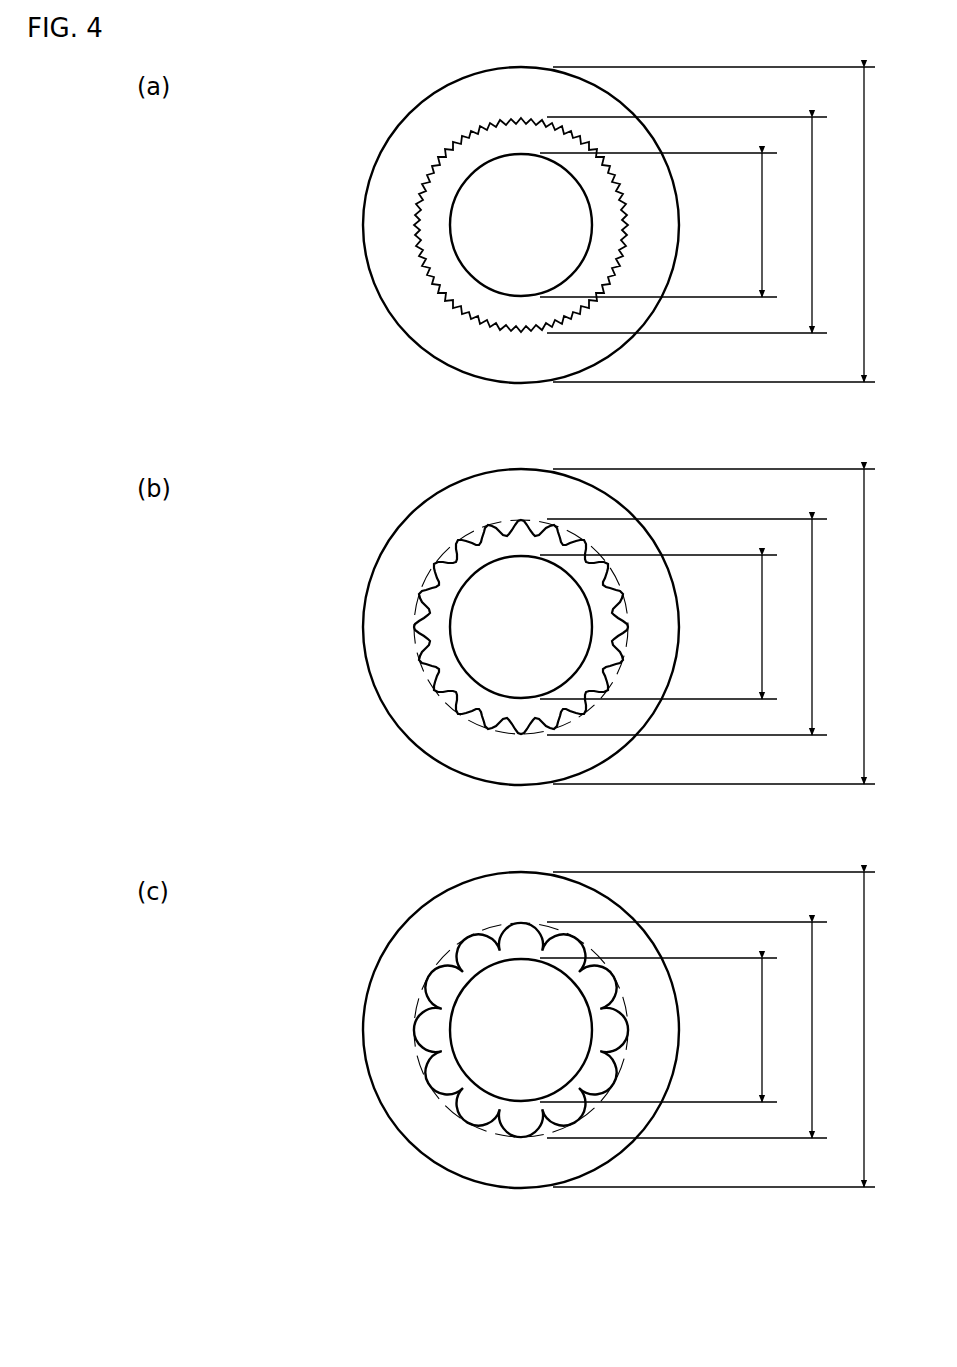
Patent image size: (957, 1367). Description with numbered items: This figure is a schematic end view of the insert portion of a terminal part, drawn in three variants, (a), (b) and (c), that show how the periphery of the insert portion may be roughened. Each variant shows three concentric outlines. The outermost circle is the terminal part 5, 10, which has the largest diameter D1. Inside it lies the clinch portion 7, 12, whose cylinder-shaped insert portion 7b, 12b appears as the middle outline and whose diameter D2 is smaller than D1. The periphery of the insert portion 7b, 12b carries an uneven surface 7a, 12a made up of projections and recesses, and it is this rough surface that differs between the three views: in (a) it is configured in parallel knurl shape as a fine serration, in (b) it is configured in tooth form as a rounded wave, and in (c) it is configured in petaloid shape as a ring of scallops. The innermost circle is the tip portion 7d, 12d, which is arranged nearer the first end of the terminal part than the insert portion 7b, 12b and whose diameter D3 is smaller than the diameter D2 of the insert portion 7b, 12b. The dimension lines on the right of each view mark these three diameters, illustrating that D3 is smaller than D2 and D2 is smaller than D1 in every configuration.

The terminal part 5 is at (320, 225).
The terminal part 10 is at (539, 627).
The clinch portion 7 is at (393, 277).
The clinch portion 12 is at (439, 646).
The uneven surface 7a is at (460, 314).
The uneven surface 12a is at (521, 646).
The insert portion 7b is at (413, 192).
The insert portion 12b is at (452, 646).
The tip portion 7d is at (596, 246).
The tip portion 12d is at (521, 627).